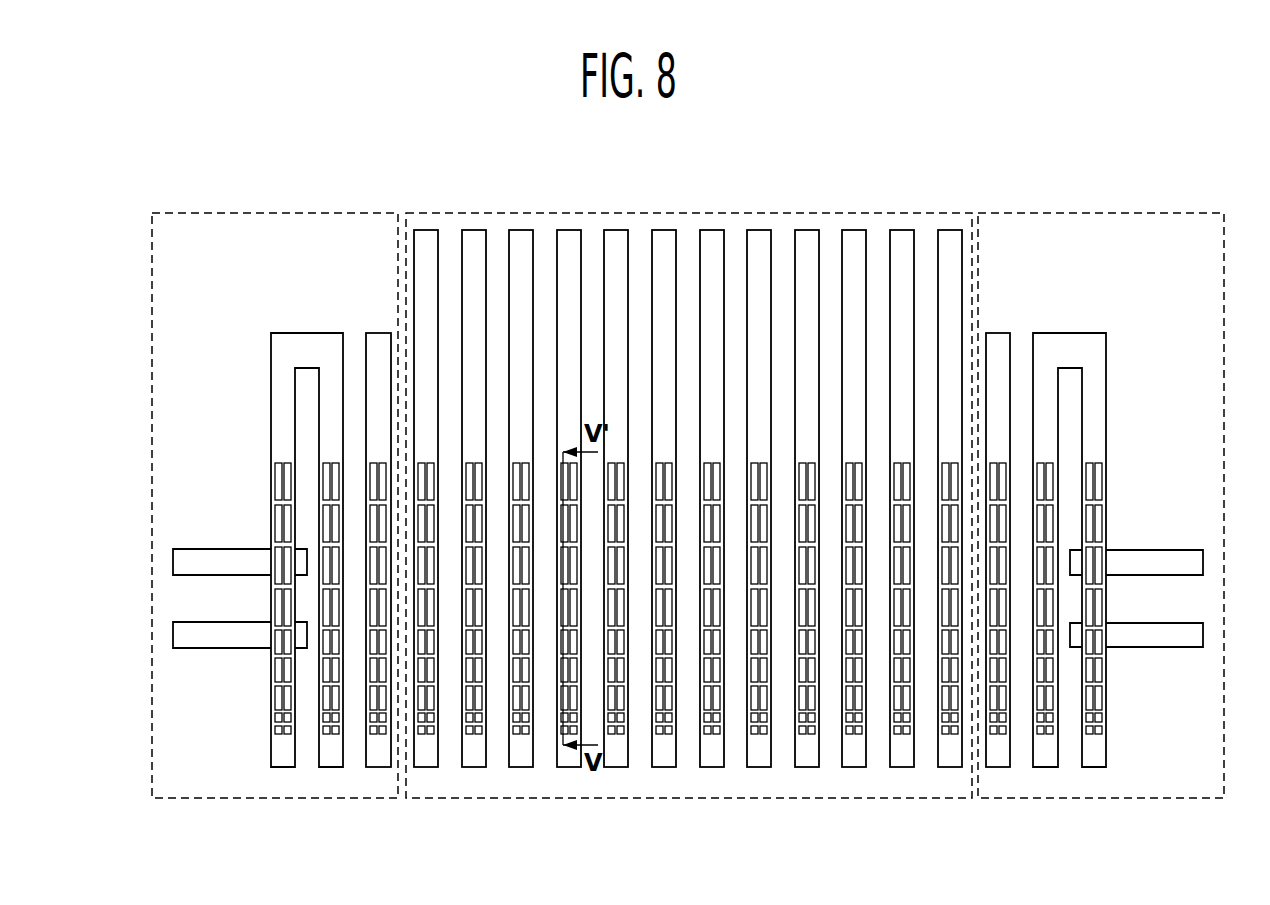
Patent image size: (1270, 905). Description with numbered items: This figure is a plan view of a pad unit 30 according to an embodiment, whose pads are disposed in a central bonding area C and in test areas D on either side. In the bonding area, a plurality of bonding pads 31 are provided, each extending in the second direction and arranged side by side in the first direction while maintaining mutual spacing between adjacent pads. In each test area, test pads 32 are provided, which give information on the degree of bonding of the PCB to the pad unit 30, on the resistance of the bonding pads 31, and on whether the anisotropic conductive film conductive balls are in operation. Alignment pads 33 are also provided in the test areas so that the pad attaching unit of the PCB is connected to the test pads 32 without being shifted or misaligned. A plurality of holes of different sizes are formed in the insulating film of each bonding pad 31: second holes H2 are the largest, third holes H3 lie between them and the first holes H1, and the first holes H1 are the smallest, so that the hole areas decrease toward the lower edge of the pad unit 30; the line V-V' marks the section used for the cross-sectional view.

The pad unit 30 is at (151, 136).
The bonding pad 31 is at (426, 235).
The test pad 32 is at (323, 340).
The alignment pad 33 is at (178, 563).
The first hole H1 is at (481, 733).
The second hole H2 is at (478, 613).
The third hole H3 is at (466, 694).